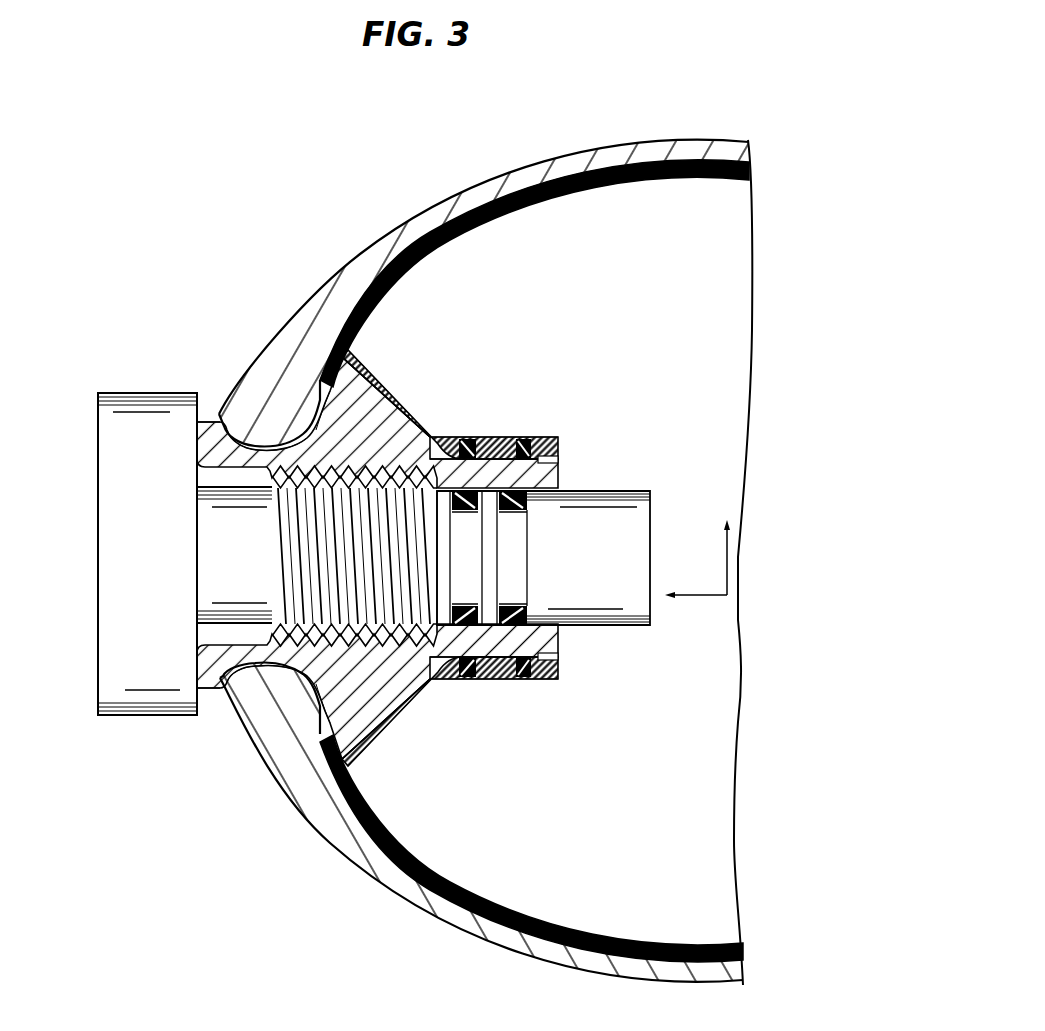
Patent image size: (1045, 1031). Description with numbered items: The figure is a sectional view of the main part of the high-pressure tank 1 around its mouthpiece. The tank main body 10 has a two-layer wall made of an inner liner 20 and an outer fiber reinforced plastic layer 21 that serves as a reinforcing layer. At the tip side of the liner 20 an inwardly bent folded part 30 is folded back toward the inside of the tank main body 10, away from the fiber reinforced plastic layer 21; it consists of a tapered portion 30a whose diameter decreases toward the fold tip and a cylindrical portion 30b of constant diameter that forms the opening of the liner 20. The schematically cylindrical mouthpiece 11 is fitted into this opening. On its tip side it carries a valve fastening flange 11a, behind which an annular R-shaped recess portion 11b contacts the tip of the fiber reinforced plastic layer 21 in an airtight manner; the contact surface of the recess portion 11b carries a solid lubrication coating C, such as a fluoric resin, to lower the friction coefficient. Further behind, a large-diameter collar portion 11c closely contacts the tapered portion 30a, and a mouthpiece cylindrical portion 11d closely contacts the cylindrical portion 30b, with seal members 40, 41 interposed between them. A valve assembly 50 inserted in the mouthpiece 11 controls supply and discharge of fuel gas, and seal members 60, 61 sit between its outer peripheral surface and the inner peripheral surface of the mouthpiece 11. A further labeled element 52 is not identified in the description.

The high-pressure tank 1 is at (234, 266).
The tank main body 10 is at (491, 180).
The liner 20 is at (457, 240).
The Fiber Reinforced Plastic (FRP) layer 21 is at (331, 306).
The mouthpiece 11 is at (211, 430).
The valve fastening flange 11a is at (190, 430).
The recess portion 11b is at (253, 448).
The collar portion 11c is at (387, 393).
The mouthpiece cylindrical portion 11d is at (450, 437).
The folded part 30 is at (558, 430).
The tapered portion 30a is at (405, 392).
The cylindrical portion 30b is at (506, 437).
The seal member 40 is at (474, 440).
The seal member 41 is at (523, 440).
The valve assembly 50 is at (122, 384).
The contact surface 52 is at (316, 395).
The seal member 60 is at (543, 558).
The seal member 61 is at (530, 500).
The solid lubrication coating C is at (280, 428).